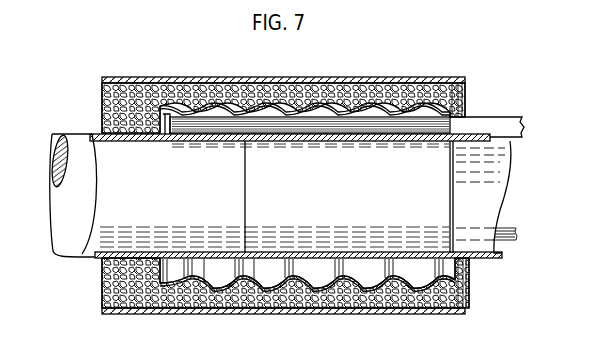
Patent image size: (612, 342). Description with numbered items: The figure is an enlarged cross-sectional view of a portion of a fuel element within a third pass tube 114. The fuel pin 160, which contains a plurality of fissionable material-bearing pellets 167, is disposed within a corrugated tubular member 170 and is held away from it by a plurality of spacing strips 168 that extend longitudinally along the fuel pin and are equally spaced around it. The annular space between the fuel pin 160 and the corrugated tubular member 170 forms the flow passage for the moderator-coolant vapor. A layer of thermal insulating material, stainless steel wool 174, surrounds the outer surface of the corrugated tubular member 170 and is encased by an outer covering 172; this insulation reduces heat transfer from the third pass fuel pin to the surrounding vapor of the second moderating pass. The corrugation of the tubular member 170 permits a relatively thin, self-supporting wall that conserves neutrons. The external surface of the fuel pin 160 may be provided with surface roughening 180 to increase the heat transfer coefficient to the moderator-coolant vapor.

The third pass tube 114 is at (326, 71).
The outer covering 172 is at (396, 82).
The stainless steel wool 174 is at (455, 90).
The corrugated tubular member 170 is at (457, 113).
The spacing strips 168 is at (502, 125).
The surface roughening 180 is at (522, 131).
The fuel pin 160 is at (70, 246).
The fissionable material-bearing pellets 167 is at (389, 194).